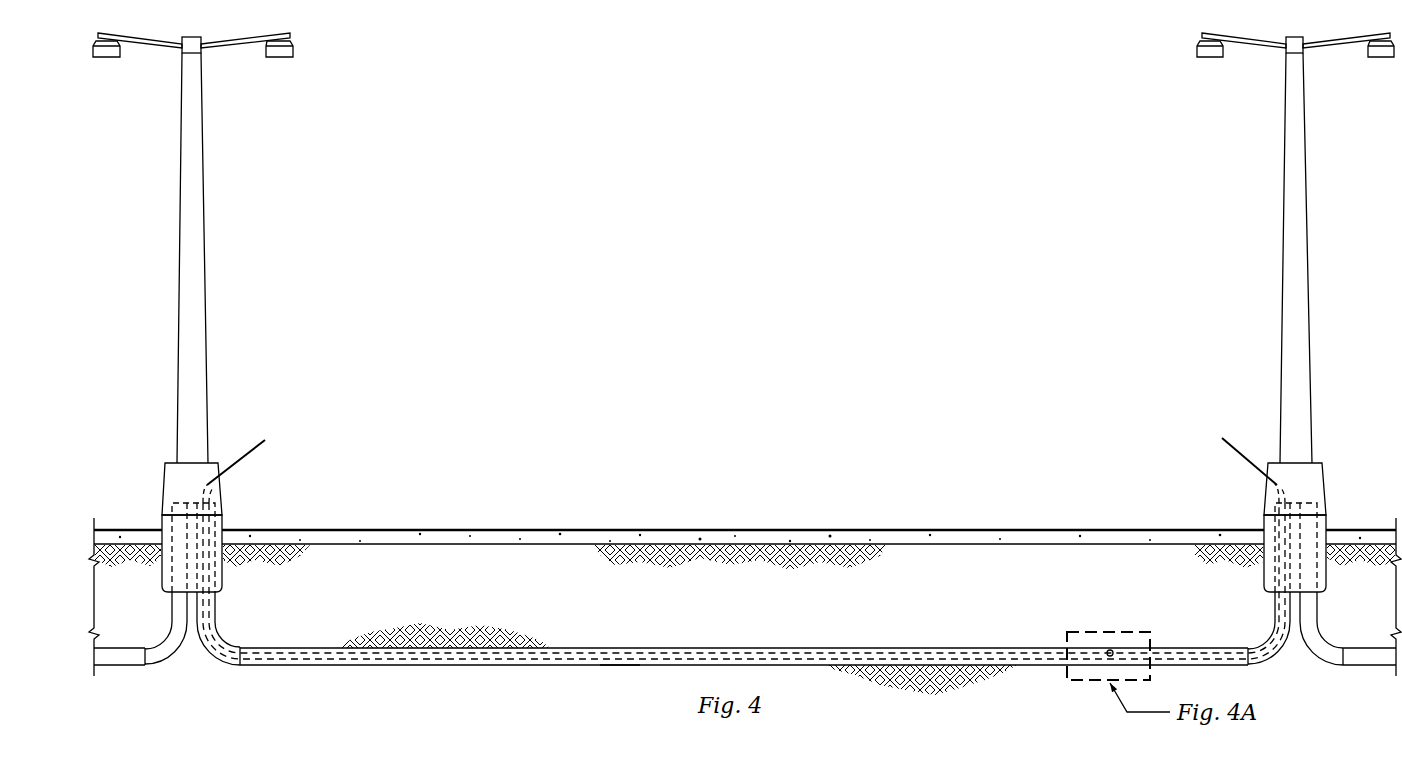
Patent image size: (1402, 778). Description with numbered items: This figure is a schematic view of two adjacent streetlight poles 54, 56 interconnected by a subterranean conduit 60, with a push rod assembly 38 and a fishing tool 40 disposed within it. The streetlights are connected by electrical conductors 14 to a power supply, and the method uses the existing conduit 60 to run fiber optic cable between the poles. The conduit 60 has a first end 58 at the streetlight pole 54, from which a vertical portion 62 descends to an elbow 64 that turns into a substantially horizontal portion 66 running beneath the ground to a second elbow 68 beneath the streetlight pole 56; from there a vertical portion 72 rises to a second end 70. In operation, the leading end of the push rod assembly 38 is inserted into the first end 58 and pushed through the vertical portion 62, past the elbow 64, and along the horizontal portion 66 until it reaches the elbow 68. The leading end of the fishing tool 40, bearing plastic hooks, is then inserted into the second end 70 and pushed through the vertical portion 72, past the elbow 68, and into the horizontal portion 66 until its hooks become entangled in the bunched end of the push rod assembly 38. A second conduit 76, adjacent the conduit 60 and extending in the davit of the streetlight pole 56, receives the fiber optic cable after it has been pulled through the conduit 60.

The electrical conductors 14 is at (337, 662).
The push rod assembly 38 is at (243, 457).
The fishing tool 40 is at (1240, 466).
The streetlight pole 54 is at (180, 250).
The streetlight pole 56 is at (1308, 250).
The first end of conduit 58 is at (213, 505).
The conduit 60 is at (530, 667).
The vertical portion of conduit 62 is at (215, 602).
The elbow 64 is at (210, 650).
The horizontal portion of conduit 66 is at (623, 668).
The elbow 68 is at (1277, 652).
The second end of conduit 70 is at (1270, 506).
The vertical portion of conduit 72 is at (1275, 602).
The conduit 76 is at (1365, 667).